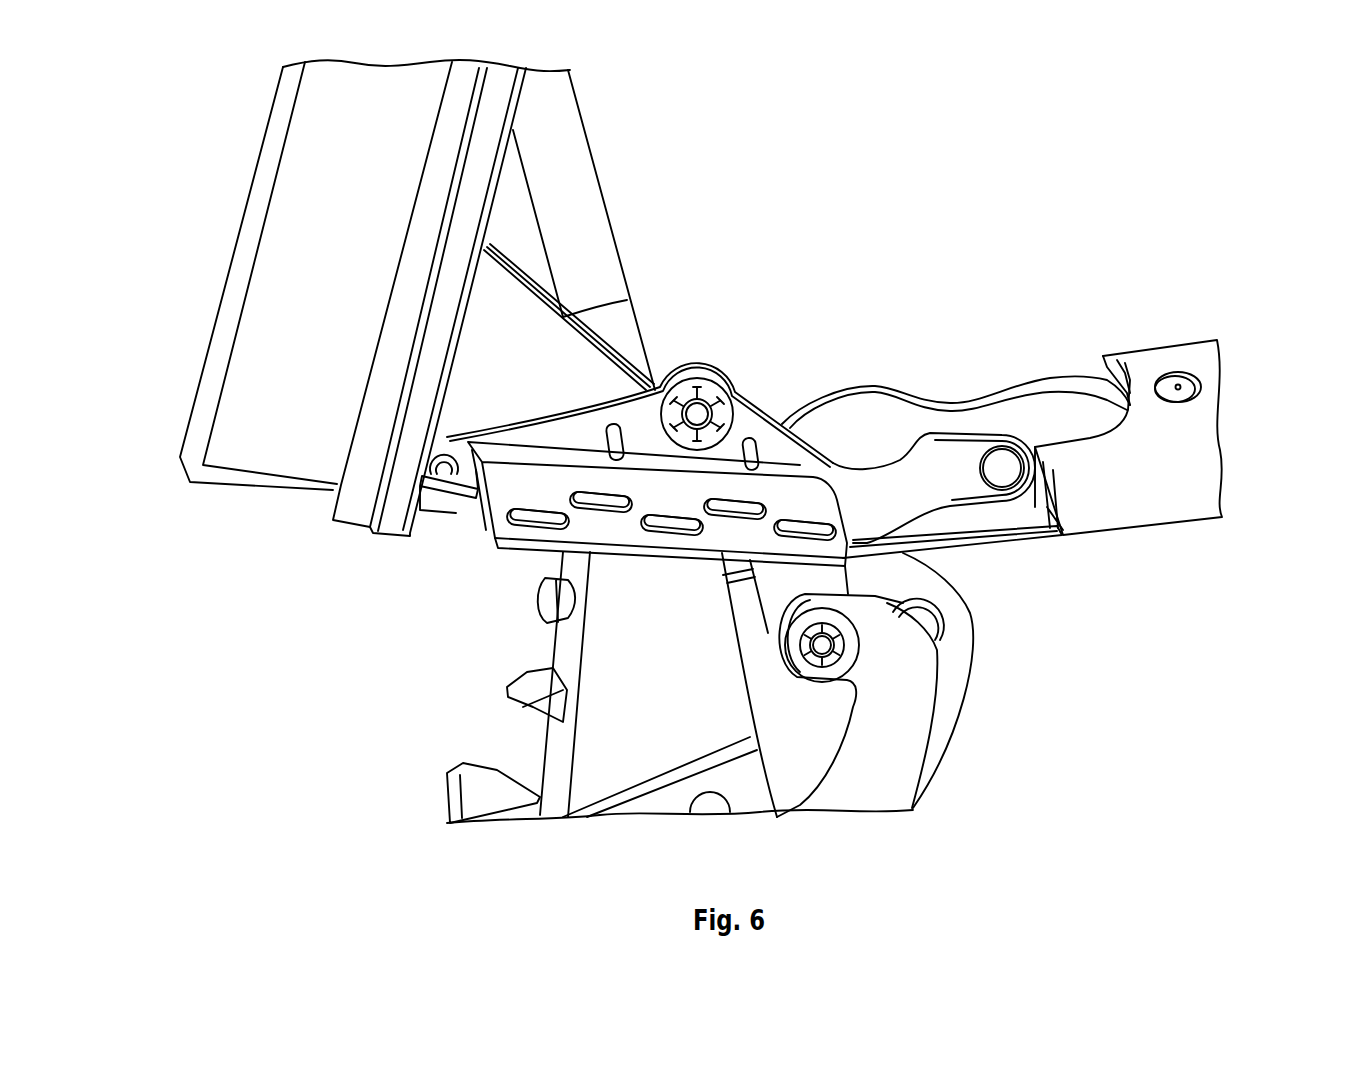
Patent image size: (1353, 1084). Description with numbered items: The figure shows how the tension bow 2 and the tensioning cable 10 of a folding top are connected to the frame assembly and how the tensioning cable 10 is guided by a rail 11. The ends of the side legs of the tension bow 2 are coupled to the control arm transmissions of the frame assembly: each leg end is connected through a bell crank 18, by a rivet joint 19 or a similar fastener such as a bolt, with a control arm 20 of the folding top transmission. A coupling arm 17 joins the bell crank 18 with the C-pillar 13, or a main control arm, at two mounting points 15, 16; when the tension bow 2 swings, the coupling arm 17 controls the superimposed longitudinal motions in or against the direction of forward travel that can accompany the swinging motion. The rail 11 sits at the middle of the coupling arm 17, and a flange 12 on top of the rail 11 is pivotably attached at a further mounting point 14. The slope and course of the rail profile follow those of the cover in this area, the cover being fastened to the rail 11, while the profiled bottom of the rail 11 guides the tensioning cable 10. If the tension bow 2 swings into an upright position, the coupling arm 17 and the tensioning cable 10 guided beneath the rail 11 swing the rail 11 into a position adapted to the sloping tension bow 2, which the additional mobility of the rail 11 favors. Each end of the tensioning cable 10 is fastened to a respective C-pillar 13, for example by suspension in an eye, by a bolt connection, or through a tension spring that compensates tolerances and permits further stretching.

The tension bow 2 is at (1166, 425).
The tensioning cable 10 is at (983, 538).
The rail 11 is at (508, 487).
The flange 12 is at (645, 423).
The C-pillar 13 is at (300, 275).
The mounting point 14 is at (702, 380).
The mounting point 15 is at (420, 460).
The mounting point 16 is at (1010, 457).
The coupling arm 17 is at (893, 485).
The bell crank 18 is at (983, 417).
The rivet joint 19 is at (1192, 385).
The control arm 20 is at (907, 743).